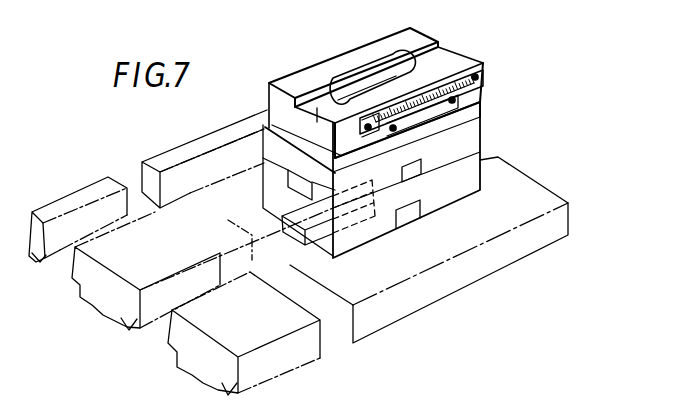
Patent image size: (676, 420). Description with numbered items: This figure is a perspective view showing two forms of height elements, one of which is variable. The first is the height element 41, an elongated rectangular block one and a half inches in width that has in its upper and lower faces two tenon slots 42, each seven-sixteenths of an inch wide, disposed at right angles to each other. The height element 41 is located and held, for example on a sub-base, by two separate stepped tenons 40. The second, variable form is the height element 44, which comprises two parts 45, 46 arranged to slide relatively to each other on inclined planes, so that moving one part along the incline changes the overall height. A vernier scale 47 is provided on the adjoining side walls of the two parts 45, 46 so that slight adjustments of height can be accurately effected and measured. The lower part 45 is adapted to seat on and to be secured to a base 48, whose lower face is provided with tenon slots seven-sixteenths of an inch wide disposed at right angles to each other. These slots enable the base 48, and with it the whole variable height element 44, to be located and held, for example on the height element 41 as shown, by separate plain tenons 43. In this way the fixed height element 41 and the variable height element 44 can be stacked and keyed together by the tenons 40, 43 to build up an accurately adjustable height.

The stepped tenon 40 is at (300, 226).
The height element 41 is at (463, 163).
The tenon slot 42 is at (405, 220).
The plain tenon 43 is at (288, 188).
The height element 44 is at (487, 91).
The part 45 is at (447, 117).
The part 46 is at (463, 63).
The vernier scale 47 is at (405, 116).
The base 48 is at (463, 132).